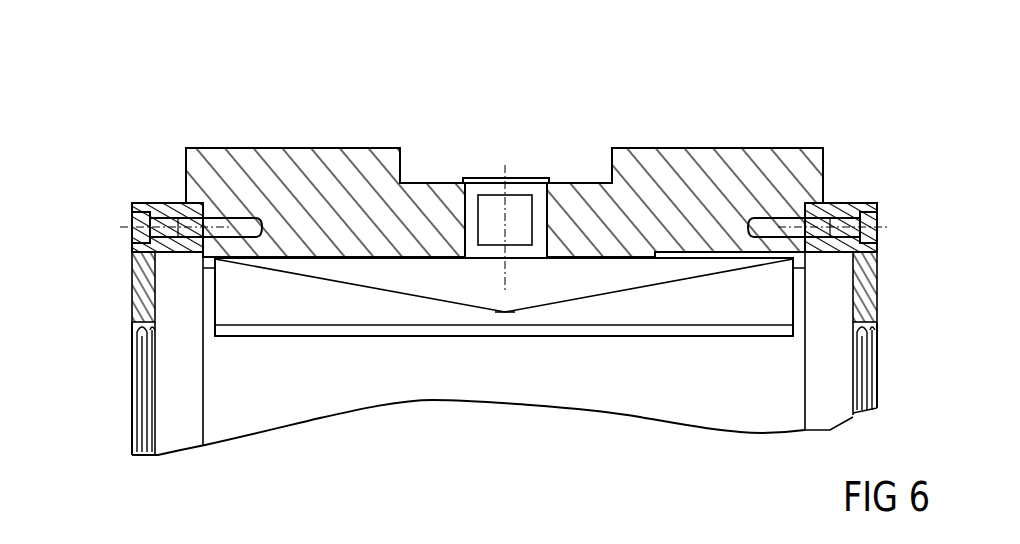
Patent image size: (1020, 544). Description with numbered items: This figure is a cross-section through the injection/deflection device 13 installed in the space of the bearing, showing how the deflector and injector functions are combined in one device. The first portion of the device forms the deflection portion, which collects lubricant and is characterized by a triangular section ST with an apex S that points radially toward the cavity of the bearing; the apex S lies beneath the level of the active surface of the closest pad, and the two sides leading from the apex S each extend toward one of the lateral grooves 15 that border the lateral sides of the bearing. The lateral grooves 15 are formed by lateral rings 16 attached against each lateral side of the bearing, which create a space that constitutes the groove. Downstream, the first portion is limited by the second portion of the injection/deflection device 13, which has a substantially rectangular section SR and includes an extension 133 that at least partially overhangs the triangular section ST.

The injection/deflection device 13 is at (385, 283).
The extension 133 is at (313, 328).
The lateral groove 15 is at (143, 456).
The lateral ring 16 is at (132, 270).
The apex S is at (505, 314).
The triangular section ST is at (491, 294).
The rectangular section SR is at (260, 304).